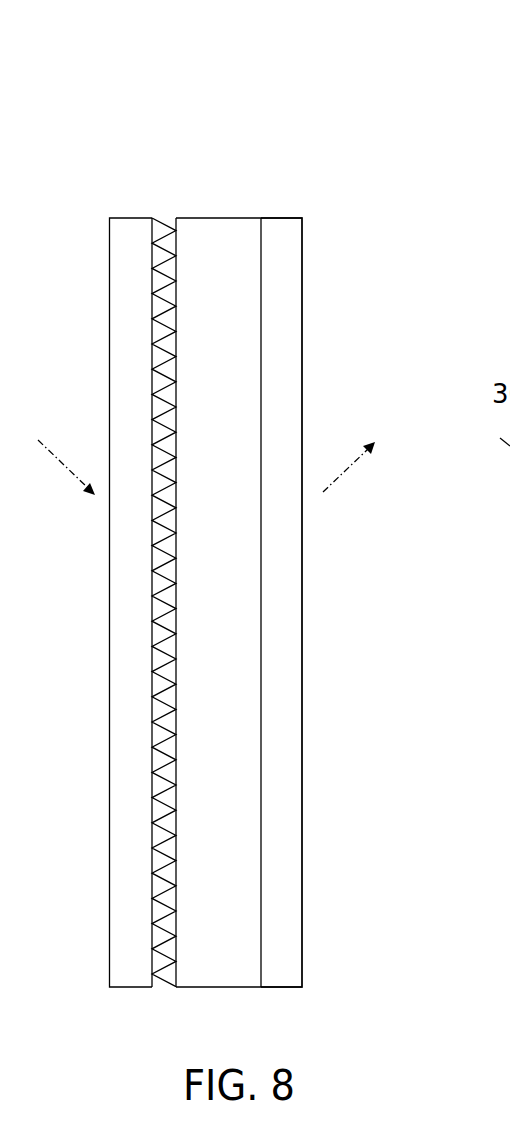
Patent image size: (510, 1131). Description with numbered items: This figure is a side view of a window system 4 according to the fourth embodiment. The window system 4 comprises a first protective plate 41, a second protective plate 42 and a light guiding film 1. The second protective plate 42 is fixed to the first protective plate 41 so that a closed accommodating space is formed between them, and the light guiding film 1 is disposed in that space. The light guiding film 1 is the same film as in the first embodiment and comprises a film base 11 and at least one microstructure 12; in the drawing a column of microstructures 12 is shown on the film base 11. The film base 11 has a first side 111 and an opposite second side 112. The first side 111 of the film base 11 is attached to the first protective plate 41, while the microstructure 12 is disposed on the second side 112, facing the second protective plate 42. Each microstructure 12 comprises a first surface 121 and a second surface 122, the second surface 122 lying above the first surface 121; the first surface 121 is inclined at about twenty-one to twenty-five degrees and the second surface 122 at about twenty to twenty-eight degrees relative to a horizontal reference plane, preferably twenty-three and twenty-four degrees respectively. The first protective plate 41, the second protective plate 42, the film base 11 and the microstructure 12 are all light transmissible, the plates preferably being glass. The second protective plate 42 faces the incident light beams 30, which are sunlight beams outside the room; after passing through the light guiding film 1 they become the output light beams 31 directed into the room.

The window system 4 is at (327, 80).
The light guiding film 1 is at (272, 136).
The film base 11 is at (218, 226).
The first side 111 is at (260, 238).
The second side 112 is at (161, 231).
The microstructure 12 is at (158, 229).
The first surface 121 is at (148, 238).
The second surface 122 is at (163, 226).
The first protective plate 41 is at (285, 270).
The second protective plate 42 is at (125, 269).
The incident light beams 30 is at (63, 460).
The output light beams 31 is at (343, 474).